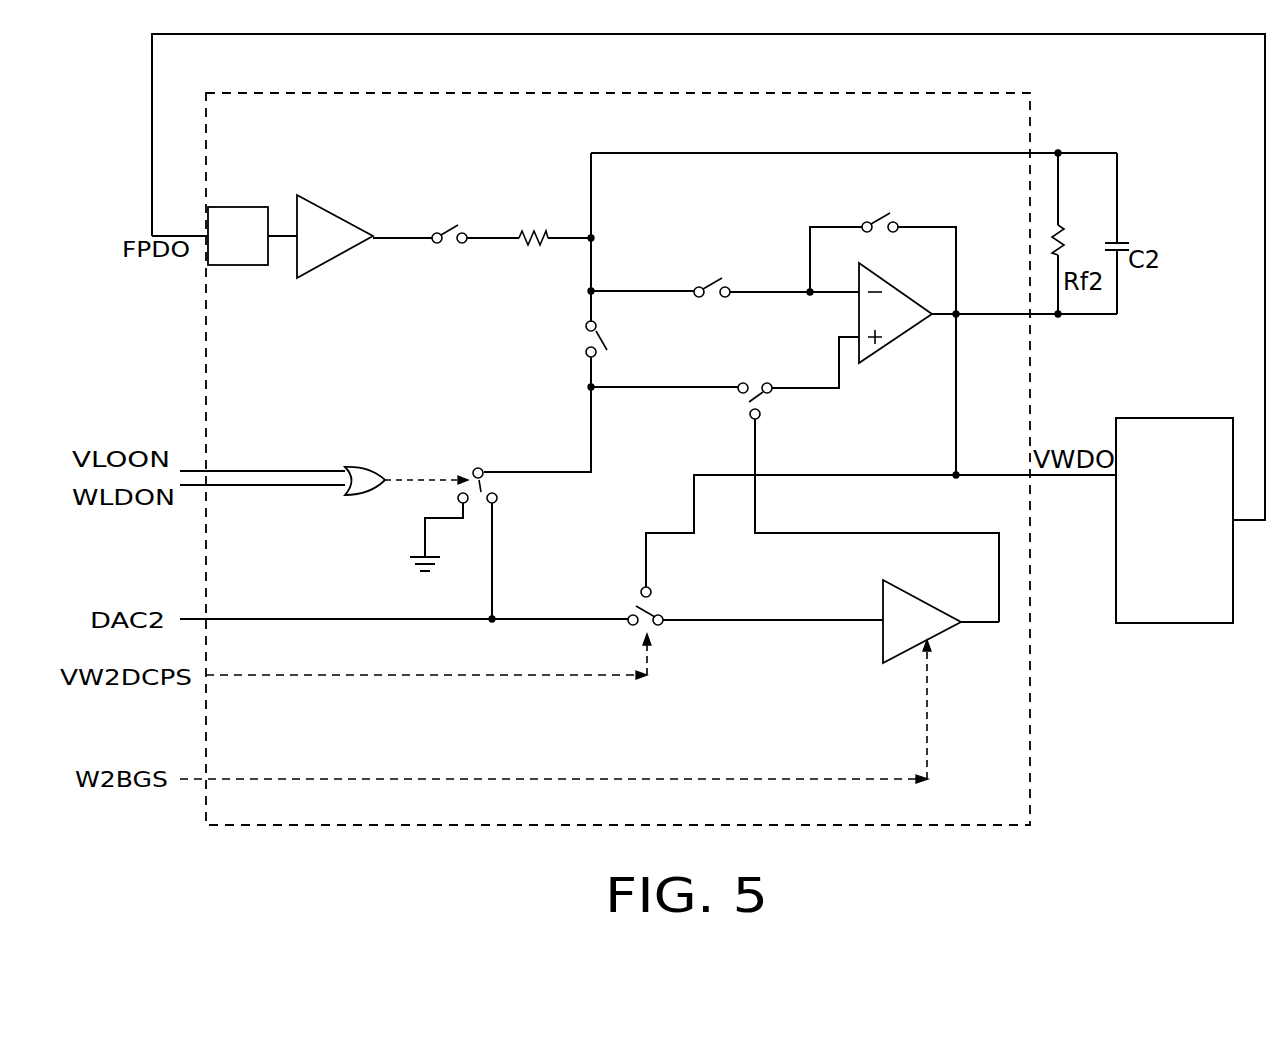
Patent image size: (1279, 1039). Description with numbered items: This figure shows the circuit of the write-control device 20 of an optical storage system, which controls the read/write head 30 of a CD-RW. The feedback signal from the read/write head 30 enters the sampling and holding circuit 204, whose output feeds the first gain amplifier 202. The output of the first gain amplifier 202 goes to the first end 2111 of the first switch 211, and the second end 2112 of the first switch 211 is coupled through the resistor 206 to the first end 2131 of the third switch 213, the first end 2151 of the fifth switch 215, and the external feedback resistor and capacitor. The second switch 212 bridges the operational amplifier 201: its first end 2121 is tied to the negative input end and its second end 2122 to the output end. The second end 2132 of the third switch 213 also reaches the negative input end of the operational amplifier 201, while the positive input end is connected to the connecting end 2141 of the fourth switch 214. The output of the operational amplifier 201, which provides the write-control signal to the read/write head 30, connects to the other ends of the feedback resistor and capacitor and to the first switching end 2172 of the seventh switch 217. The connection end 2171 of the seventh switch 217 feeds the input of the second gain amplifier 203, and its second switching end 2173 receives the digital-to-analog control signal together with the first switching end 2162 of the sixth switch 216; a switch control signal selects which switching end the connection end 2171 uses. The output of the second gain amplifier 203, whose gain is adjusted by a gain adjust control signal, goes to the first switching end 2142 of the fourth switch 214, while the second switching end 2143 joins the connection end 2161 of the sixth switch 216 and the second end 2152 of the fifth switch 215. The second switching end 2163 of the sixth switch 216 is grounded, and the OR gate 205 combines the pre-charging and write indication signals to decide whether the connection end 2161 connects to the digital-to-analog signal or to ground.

The write-control device 20 is at (702, 92).
The read/write head 30 is at (1162, 415).
The operational amplifier 201 is at (898, 311).
The first gain amplifier 202 is at (335, 226).
The second gain amplifier 203 is at (922, 615).
The sampling and holding circuit 204 is at (238, 222).
The OR gate 205 is at (362, 464).
The resistor 206 is at (534, 265).
The first switch 211 is at (450, 243).
The first end of the first switch 2111 is at (410, 229).
The second end of the first switch 2112 is at (489, 227).
The second switch 212 is at (884, 203).
The first end of the second switch 2121 is at (827, 217).
The second end of the second switch 2122 is at (936, 220).
The third switch 213 is at (711, 267).
The first end of the third switch 2131 is at (663, 283).
The second end of the third switch 2132 is at (760, 283).
The fourth switch 214 is at (838, 480).
The connecting end of the fourth switch 2141 is at (799, 380).
The first switching end of the fourth switch 2142 is at (874, 515).
The second switching end of the fourth switch 2143 is at (713, 380).
The fifth switch 215 is at (596, 348).
The first end of the fifth switch 2151 is at (564, 317).
The second end of the fifth switch 2152 is at (565, 370).
The sixth switch 216 is at (472, 525).
The connection end of the sixth switch 2161 is at (509, 461).
The first switching end of the sixth switch 2162 is at (518, 556).
The second switching end of the sixth switch 2163 is at (431, 532).
The seventh switch 217 is at (846, 570).
The connection end of the seventh switch 2171 is at (691, 611).
The first switching end of the seventh switch 2172 is at (878, 536).
The second switching end of the seventh switch 2173 is at (607, 611).